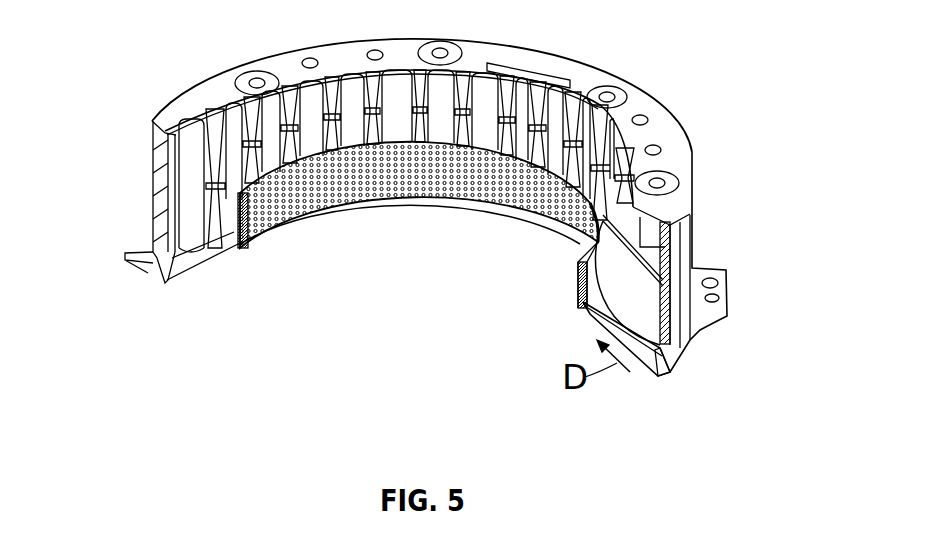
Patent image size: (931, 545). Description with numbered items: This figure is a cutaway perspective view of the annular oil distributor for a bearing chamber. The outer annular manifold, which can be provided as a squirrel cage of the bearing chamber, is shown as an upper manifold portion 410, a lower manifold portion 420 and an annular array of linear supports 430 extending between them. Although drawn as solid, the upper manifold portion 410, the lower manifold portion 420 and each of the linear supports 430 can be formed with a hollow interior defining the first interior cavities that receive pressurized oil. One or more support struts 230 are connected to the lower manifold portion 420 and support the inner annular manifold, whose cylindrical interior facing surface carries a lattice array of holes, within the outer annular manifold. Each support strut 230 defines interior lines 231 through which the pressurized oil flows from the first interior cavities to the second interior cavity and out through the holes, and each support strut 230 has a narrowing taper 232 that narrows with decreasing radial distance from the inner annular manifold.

The upper manifold portion 410 is at (192, 108).
The linear supports 430 is at (160, 163).
The lower manifold portion 420 is at (157, 277).
The support struts 230 is at (583, 312).
The interior lines 231 is at (670, 372).
The narrowing taper 232 is at (597, 327).